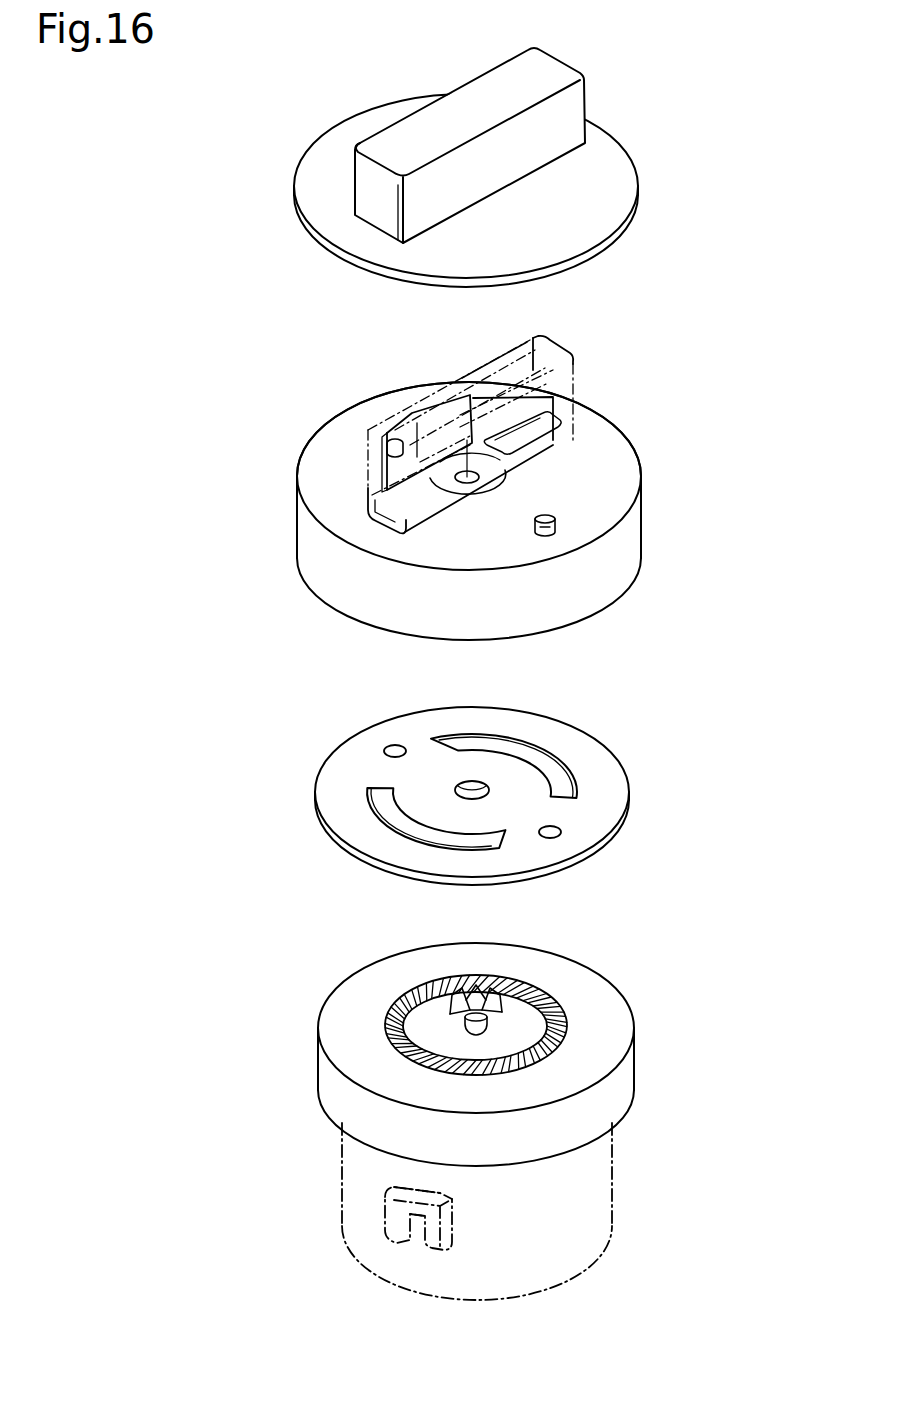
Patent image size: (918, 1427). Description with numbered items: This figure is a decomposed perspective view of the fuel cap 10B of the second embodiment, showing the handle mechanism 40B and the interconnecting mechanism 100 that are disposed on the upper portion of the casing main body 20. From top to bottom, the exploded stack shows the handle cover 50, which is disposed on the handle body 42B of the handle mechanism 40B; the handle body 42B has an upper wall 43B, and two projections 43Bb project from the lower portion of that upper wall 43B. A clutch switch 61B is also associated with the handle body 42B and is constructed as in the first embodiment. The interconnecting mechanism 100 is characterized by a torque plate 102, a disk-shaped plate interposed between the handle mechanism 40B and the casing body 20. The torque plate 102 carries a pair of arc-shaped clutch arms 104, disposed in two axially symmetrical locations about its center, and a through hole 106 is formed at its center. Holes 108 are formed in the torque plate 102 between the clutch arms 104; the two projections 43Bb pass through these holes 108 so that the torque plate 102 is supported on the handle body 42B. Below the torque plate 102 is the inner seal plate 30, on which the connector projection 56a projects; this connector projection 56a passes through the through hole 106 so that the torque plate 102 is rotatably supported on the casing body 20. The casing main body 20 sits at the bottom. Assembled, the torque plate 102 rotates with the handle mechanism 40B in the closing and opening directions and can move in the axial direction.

The fuel cap 10B is at (203, 177).
The handle cover 50 is at (641, 168).
The handle mechanism 40B is at (764, 74).
The handle body 42B is at (646, 488).
The upper wall 43B is at (626, 452).
The projections 43Bb is at (385, 455).
The clutch switch 61B is at (390, 422).
The interconnecting mechanism 100 is at (259, 541).
The torque plate 102 is at (626, 761).
The clutch arms 104 is at (507, 737).
The through hole 106 is at (465, 785).
The holes 108 is at (392, 750).
The inner seal plate 30 is at (577, 1004).
The connector projection 56a is at (478, 1012).
The casing main body 20 is at (592, 1173).